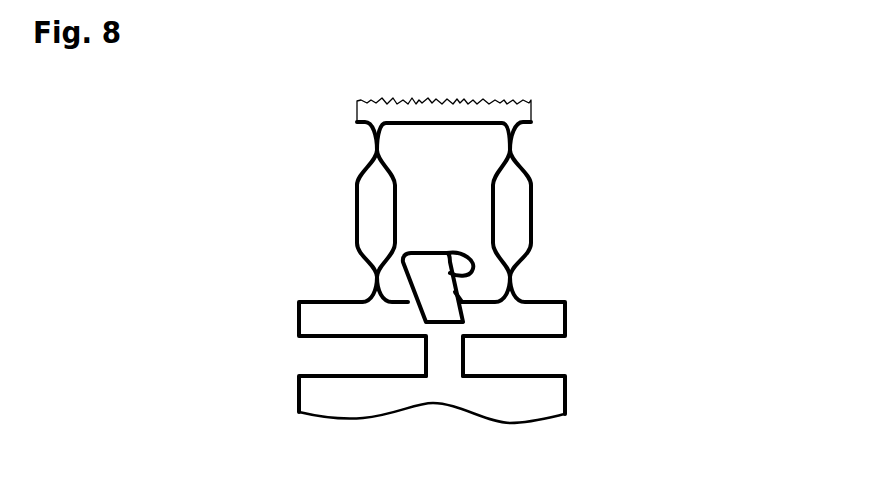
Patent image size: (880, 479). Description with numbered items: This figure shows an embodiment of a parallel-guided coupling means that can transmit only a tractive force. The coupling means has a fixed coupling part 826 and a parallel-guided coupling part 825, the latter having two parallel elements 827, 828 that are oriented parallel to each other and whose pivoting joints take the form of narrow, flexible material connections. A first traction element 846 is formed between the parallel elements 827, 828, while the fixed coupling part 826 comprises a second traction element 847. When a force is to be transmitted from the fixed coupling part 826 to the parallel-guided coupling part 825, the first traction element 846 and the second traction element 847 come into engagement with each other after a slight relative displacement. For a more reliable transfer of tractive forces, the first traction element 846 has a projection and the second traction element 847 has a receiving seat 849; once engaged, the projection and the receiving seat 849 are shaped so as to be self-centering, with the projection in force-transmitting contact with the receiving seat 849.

The parallel-guided coupling part 825 is at (584, 302).
The fixed coupling part 826 is at (598, 397).
The parallel element 827 is at (510, 205).
The parallel element 828 is at (375, 207).
The first traction element 846 is at (463, 292).
The second traction element 847 is at (424, 295).
The receiving seat 849 is at (449, 264).